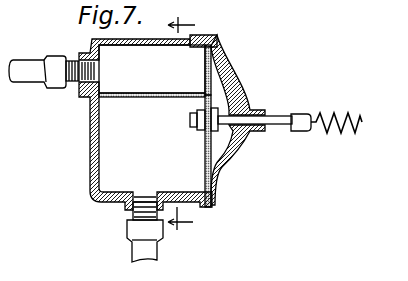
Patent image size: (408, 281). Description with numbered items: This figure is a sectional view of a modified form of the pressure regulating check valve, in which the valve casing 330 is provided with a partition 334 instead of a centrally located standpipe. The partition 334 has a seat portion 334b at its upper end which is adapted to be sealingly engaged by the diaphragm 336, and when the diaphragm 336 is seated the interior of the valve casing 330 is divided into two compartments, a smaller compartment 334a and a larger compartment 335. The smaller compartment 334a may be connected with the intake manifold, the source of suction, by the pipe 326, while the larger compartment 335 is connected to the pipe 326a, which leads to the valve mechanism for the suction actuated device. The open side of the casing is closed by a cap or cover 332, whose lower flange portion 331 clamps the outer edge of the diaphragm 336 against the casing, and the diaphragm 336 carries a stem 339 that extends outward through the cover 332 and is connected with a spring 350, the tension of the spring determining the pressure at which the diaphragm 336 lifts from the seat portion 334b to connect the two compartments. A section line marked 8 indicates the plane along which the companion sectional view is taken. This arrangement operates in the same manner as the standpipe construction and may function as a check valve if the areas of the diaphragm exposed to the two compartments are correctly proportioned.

The pipe 326 is at (25, 62).
The pipe 326a is at (133, 246).
The valve casing 330 is at (91, 178).
The lower flange of cap 331 is at (217, 193).
The cap 332 is at (229, 102).
The partition 334 is at (145, 97).
The compartment 334a is at (152, 69).
The seat portion 334b is at (206, 94).
The compartment 335 is at (143, 155).
The diaphragm 336 is at (209, 157).
The valve stem rod 339 is at (277, 120).
The spring 350 is at (350, 123).
The section line 8- 8 is at (181, 124).